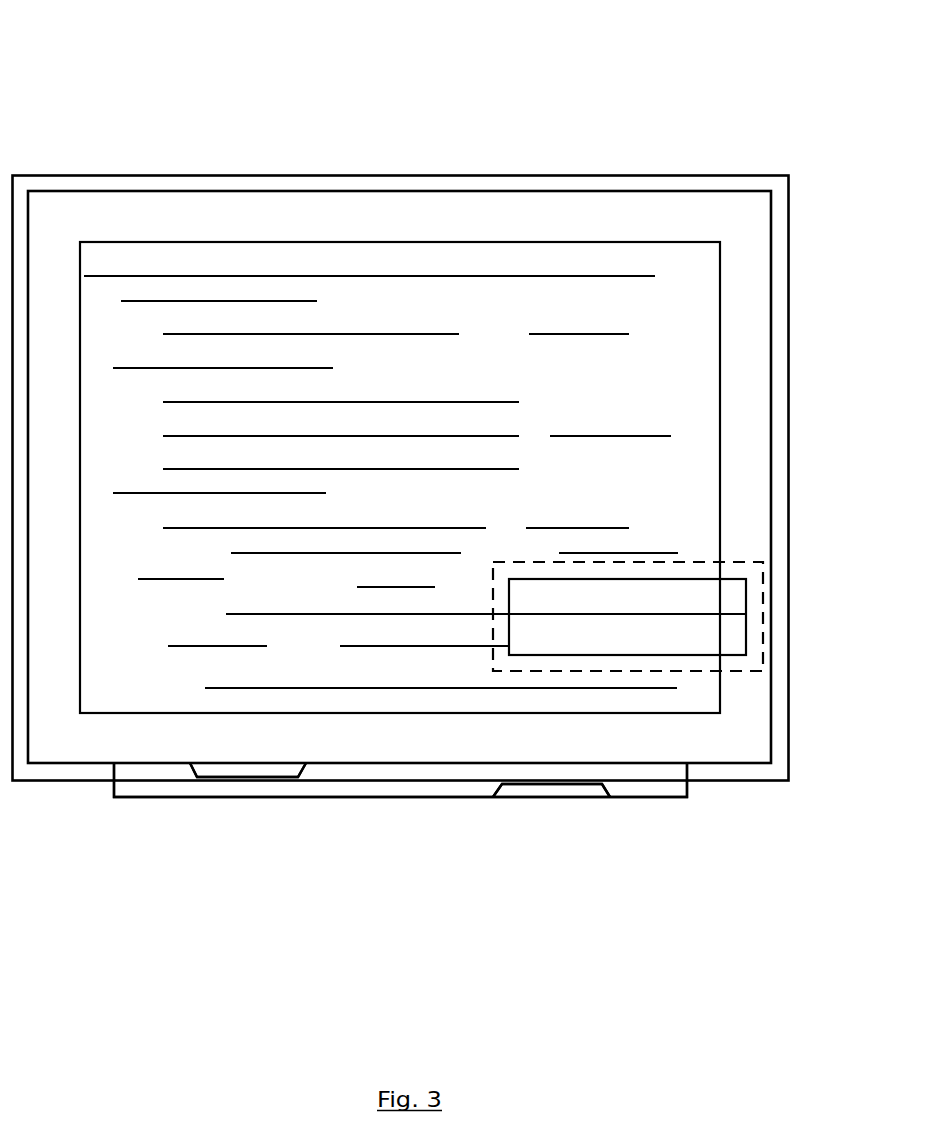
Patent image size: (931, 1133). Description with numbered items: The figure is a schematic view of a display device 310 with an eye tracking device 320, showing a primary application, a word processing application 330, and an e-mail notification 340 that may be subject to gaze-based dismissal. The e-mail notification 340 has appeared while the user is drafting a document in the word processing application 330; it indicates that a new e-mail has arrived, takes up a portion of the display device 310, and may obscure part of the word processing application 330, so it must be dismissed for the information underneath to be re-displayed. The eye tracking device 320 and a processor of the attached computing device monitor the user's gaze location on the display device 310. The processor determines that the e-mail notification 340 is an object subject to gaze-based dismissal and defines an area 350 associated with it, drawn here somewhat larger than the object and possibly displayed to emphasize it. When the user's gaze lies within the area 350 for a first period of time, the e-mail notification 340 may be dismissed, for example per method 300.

The method 300 is at (98, 90).
The display device 310 is at (311, 175).
The eye tracking device 320 is at (445, 798).
The word processing application 330 is at (583, 242).
The e-mail notification 340 is at (726, 579).
The area 350 is at (726, 671).